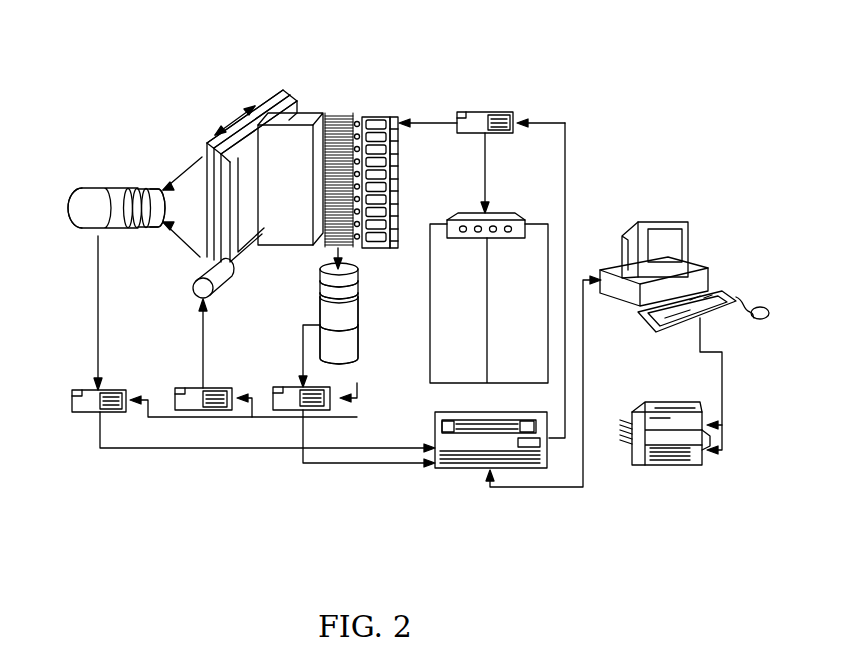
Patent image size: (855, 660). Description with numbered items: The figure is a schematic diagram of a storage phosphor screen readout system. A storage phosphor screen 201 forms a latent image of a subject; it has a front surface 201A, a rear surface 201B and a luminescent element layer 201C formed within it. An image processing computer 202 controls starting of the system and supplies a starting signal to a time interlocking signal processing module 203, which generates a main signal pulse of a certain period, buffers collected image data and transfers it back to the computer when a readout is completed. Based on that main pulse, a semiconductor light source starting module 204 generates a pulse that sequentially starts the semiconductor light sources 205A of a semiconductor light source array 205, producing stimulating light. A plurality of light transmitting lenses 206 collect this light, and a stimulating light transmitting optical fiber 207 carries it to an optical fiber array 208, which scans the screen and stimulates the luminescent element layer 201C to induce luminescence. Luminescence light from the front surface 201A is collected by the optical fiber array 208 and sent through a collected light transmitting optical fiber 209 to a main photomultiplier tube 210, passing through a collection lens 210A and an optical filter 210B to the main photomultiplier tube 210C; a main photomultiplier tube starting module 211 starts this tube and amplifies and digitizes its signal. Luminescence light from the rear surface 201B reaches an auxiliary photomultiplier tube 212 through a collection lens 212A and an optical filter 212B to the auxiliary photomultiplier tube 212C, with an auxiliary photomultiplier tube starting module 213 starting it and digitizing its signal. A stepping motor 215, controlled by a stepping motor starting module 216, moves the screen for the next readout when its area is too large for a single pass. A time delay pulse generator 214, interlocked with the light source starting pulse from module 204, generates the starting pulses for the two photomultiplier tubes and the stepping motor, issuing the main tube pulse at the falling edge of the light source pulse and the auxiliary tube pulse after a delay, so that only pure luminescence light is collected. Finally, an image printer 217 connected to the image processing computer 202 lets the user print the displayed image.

The storage phosphor screen 201 is at (204, 140).
The front surface 201A is at (265, 90).
The rear surface 201B is at (278, 98).
The luminescent element layer 201C is at (270, 94).
The image processing computer 202 is at (639, 223).
The time interlocking signal processing module 203 is at (455, 469).
The semiconductor light source starting module 204 is at (474, 120).
The semiconductor light source array 205 is at (384, 116).
The semiconductor light source 205A is at (395, 119).
The light transmitting lenses 206 is at (357, 118).
The stimulating light transmitting optical fiber 207 is at (342, 114).
The optical fiber array 208 is at (290, 152).
The collected light transmitting optical fiber 209 is at (341, 247).
The main photomultiplier tube 210 is at (312, 288).
The collection lens 210A is at (357, 283).
The optical filter 210B is at (357, 307).
The main photomultiplier tube 210C is at (344, 350).
The main photomultiplier tube starting module 211 is at (283, 386).
The auxiliary photomultiplier tube 212 is at (74, 240).
The collection lens 212A is at (158, 187).
The optical filter 212B is at (140, 188).
The auxiliary photomultiplier tube 212C is at (72, 205).
The auxiliary photomultiplier tube starting module 213 is at (87, 390).
The time delay pulse generator 214 is at (502, 221).
The stepping motor 215 is at (195, 281).
The stepping motor starting module 216 is at (187, 388).
The image printer 217 is at (676, 400).